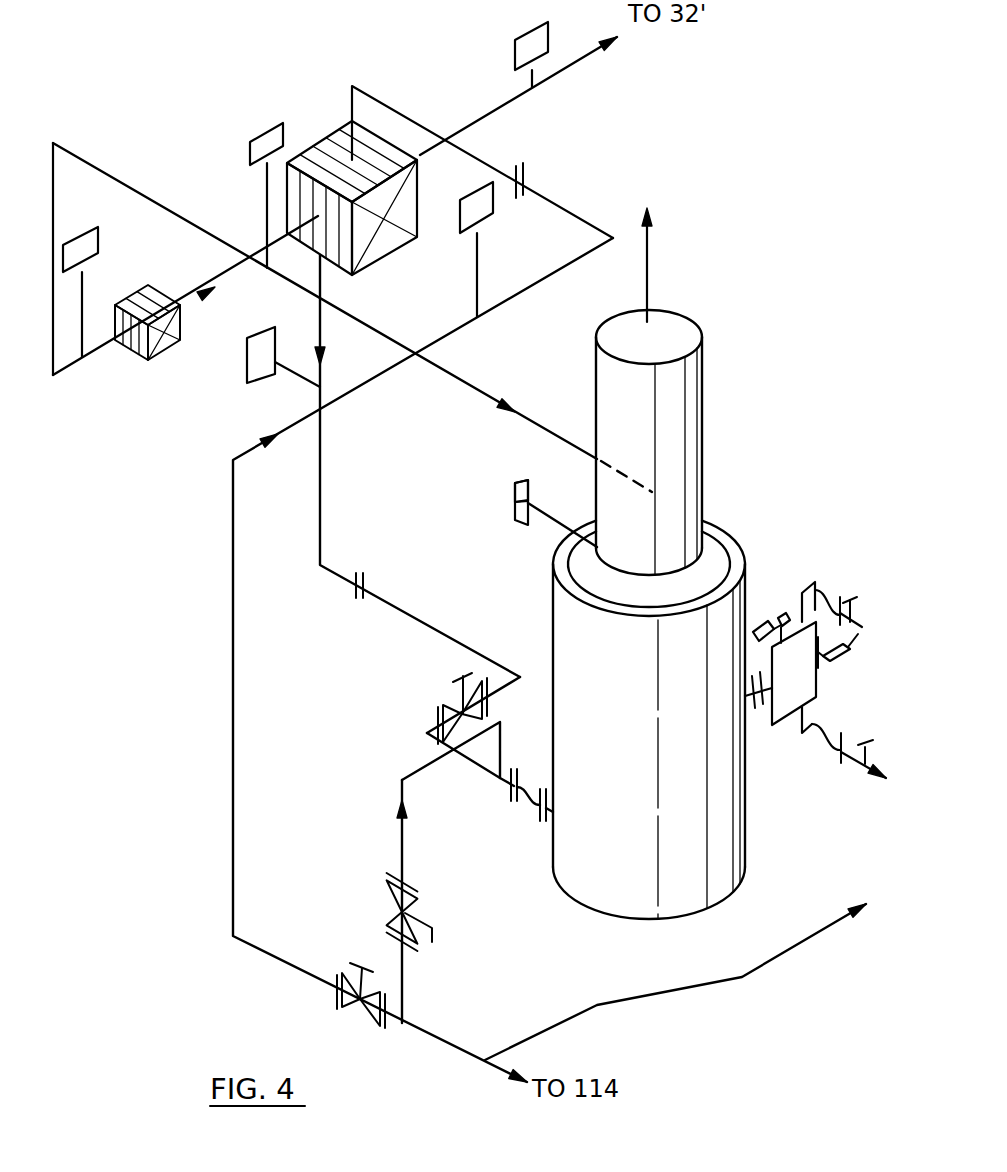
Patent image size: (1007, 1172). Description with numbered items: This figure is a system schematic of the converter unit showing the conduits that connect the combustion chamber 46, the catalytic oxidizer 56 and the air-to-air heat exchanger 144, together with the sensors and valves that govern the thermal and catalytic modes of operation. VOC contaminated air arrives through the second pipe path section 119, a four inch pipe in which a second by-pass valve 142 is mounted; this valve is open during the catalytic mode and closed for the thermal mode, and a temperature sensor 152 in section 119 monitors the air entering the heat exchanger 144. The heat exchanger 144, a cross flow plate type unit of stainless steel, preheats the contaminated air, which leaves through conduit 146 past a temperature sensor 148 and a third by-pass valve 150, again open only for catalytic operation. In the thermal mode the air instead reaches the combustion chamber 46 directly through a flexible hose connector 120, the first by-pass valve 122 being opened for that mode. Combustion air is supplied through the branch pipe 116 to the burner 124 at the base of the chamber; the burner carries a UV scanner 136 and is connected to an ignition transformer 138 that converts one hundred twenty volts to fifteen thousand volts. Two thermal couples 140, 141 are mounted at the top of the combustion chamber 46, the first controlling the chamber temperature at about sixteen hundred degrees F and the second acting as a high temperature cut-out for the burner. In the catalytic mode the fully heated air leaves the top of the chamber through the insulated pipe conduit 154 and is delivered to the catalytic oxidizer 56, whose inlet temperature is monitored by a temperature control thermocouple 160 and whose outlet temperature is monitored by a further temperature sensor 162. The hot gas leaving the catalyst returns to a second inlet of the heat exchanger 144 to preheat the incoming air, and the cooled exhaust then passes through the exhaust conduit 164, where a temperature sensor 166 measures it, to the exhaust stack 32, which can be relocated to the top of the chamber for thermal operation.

The exhaust stack 32 is at (701, 400).
The combustion chamber 46 is at (748, 822).
The catalytic oxidizer 56 is at (137, 352).
The branch pipe 116 is at (672, 990).
The second pipe path section 119 is at (236, 762).
The flexible hose connector 120 is at (537, 811).
The first by-pass valve 122 is at (390, 887).
The burner 124 is at (783, 726).
The UV scanner 136 is at (840, 660).
The ignition transformer 138 is at (760, 620).
The thermal couple 140 is at (515, 505).
The thermal couple 141 is at (515, 484).
The second by-pass valve 142 is at (346, 975).
The air-to-air heat exchanger 144 is at (400, 252).
The conduit 146 is at (322, 481).
The temperature sensor 148 is at (250, 373).
The third by-pass valve 150 is at (440, 707).
The temperature sensor 152 is at (494, 212).
The pipe conduit 154 is at (478, 381).
The temperature control thermocouple 160 is at (99, 249).
The temperature sensor 162 is at (262, 132).
The exhaust conduit 164 is at (500, 114).
The temperature sensor 166 is at (515, 41).